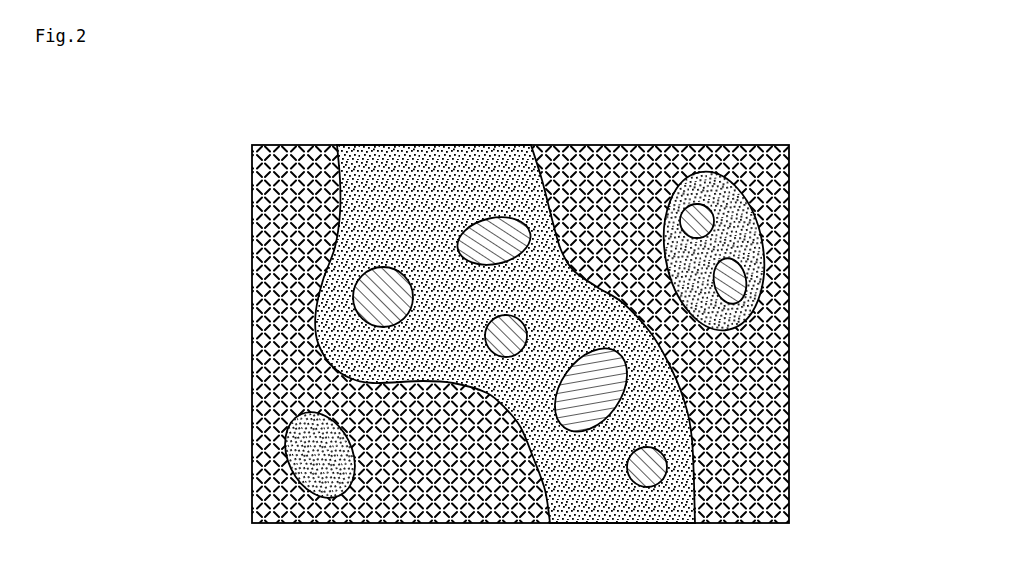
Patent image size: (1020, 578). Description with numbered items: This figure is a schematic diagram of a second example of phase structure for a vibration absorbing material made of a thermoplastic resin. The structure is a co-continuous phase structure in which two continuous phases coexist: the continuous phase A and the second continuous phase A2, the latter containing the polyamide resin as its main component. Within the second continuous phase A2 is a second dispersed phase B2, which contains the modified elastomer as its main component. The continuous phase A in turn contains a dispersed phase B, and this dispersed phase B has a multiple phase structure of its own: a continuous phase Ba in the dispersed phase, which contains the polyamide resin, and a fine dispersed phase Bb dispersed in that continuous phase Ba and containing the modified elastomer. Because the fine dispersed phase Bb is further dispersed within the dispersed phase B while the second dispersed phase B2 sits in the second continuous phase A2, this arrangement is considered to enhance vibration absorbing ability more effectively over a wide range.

The continuous phase A is at (303, 197).
The second continuous phase A2 is at (427, 208).
The second dispersed phase B2 is at (497, 218).
The dispersed phase B is at (277, 478).
The continuous phase in the dispersed phase Ba is at (733, 213).
The fine dispersed phase Bb is at (702, 212).